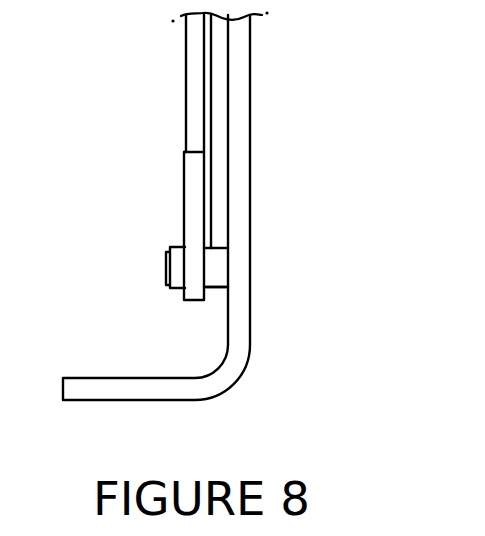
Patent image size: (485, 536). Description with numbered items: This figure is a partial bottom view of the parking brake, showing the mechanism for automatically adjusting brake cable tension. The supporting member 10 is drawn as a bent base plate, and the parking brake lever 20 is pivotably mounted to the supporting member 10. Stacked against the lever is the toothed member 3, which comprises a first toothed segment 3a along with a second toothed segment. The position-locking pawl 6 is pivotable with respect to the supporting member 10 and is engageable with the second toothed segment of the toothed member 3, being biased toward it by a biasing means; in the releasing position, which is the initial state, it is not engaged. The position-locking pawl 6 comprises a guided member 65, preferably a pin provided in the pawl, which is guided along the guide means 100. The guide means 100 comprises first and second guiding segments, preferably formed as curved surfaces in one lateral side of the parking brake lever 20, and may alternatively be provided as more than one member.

The toothed member 3 is at (187, 80).
The first toothed segment 3a is at (186, 151).
The parking brake lever 20 is at (223, 103).
The guide means 100 is at (222, 245).
The position-locking pawl 6 is at (184, 296).
The guided member 65 is at (213, 287).
The supporting member 10 is at (248, 332).